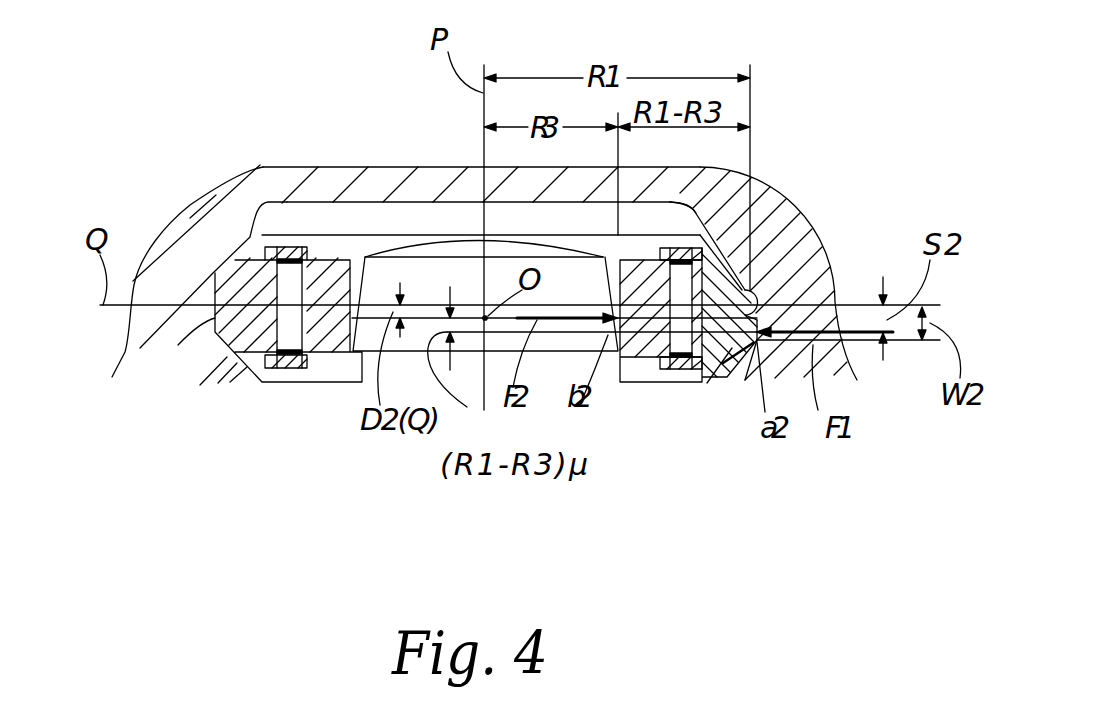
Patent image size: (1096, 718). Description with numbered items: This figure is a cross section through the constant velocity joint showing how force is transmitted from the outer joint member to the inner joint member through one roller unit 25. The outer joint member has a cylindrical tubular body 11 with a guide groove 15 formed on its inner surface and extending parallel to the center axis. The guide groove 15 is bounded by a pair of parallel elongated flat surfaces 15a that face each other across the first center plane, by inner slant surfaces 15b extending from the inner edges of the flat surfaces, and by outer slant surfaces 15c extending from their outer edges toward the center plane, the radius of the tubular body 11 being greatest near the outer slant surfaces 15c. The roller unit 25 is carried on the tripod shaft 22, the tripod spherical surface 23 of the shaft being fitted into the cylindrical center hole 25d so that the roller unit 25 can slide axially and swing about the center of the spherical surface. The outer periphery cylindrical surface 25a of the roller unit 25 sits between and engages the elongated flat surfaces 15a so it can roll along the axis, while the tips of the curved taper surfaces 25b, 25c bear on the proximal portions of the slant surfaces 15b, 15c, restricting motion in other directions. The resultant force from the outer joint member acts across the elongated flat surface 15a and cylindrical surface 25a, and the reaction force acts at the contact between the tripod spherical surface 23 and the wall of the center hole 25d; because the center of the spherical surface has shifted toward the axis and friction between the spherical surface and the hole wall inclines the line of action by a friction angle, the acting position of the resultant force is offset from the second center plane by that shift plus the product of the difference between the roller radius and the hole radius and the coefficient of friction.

The tubular body 11 is at (787, 227).
The guide groove 15 is at (360, 200).
The elongated flat surface 15a is at (755, 292).
The inner slant surface 15b is at (710, 380).
The outer slant surface 15c is at (712, 182).
The tripod shaft 22 is at (438, 243).
The tripod spherical surface 23 is at (357, 263).
The roller unit 25 is at (284, 224).
The outer periphery cylindrical surface 25a is at (215, 312).
The taper surface 25b is at (250, 375).
The taper surface 25c is at (212, 190).
The cylindrical center hole 25d is at (285, 233).